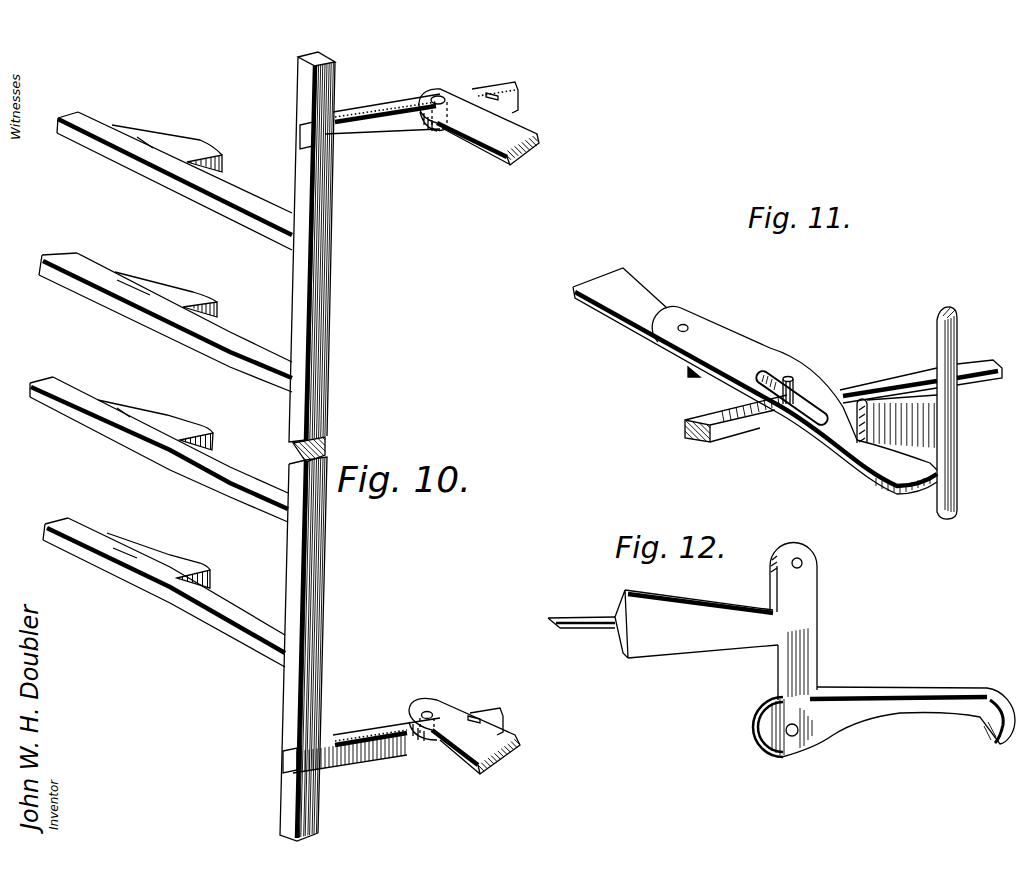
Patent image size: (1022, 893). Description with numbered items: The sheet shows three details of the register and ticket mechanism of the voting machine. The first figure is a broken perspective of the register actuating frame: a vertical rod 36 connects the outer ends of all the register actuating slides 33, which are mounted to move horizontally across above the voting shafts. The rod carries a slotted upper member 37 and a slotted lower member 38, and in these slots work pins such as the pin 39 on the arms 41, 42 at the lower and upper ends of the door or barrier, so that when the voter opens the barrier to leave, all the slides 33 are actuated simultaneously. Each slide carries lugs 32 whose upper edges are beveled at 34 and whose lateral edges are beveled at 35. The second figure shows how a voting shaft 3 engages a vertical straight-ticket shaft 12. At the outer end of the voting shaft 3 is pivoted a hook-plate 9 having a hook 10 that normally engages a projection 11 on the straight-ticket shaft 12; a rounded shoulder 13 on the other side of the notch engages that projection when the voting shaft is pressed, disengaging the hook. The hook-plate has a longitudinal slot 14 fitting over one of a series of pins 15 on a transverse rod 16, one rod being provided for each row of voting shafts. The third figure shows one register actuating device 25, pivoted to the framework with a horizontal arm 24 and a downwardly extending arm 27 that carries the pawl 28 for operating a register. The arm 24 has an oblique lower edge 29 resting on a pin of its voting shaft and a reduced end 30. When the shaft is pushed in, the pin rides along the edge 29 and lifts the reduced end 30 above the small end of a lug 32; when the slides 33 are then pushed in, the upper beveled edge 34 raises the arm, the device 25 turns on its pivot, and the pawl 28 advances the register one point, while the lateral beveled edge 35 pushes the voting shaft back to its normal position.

In FIG. 11, the voting shaft 3 is at (630, 302).
In FIG. 11, the hook-plate 9 is at (771, 348).
In FIG. 11, the hook 10 is at (905, 476).
In FIG. 11, the projection 11 is at (918, 420).
In FIG. 11, the vertical straight-ticket shaft 12 is at (958, 343).
In FIG. 11, the rounded shoulder 13 is at (815, 373).
In FIG. 11, the longitudinal slot 14 is at (808, 418).
In FIG. 11, the pin 15 is at (768, 389).
In FIG. 11, the transverse rod 16 is at (700, 431).
In FIG. 12, the horizontal arm 24 is at (694, 624).
In FIG. 12, the register actuating device 25 is at (818, 627).
In FIG. 12, the downwardly extending arm 27 is at (799, 667).
In FIG. 12, the pawl 28 is at (907, 710).
In FIG. 12, the oblique lower edge 29 is at (683, 654).
In FIG. 12, the reduced end 30 is at (588, 624).
In FIG. 10, the lug 32 is at (200, 293).
In FIG. 10, the register actuating slide 33 is at (266, 240).
In FIG. 10, the upper beveled edge 34 is at (147, 285).
In FIG. 10, the lateral beveled edge 35 is at (140, 275).
In FIG. 10, the vertical rod 36 is at (330, 296).
In FIG. 10, the slotted upper member 37 is at (397, 131).
In FIG. 10, the slotted lower member 38 is at (367, 727).
In FIG. 10, the pin 39 is at (441, 96).
In FIG. 10, the arm 41 is at (428, 711).
In FIG. 10, the arm 42 is at (517, 132).